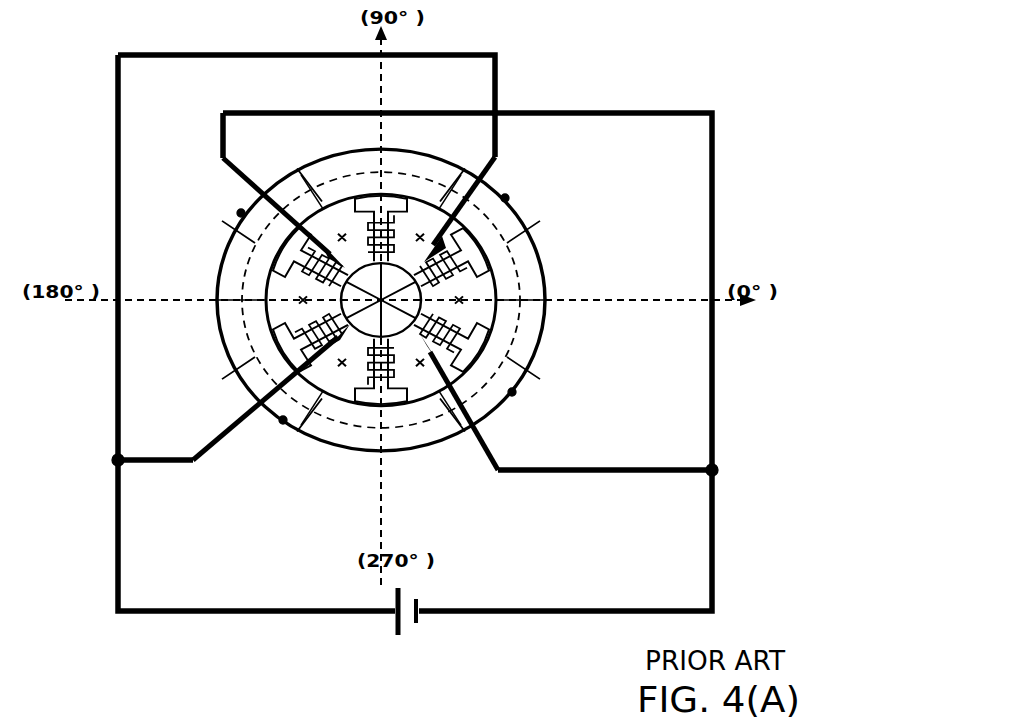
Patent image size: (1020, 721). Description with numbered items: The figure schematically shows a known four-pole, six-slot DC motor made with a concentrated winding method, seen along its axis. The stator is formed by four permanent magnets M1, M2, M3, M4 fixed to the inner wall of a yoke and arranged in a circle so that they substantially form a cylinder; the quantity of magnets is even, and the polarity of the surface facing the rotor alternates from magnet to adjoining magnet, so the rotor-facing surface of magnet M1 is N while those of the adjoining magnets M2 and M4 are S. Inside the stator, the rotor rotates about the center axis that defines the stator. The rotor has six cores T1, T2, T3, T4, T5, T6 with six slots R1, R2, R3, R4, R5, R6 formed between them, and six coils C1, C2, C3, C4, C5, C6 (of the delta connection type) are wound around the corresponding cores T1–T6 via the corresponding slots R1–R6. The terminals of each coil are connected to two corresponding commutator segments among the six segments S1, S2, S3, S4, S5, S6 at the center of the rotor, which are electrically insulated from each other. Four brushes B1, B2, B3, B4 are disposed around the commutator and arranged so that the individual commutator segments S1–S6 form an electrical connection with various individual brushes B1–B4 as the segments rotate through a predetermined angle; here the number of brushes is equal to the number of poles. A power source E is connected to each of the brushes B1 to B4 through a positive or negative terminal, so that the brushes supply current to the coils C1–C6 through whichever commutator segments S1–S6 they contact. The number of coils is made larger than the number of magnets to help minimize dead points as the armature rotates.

The brush B1 is at (496, 190).
The brush B2 is at (455, 420).
The brush B3 is at (348, 414).
The brush B4 is at (278, 188).
The core T1 is at (500, 248).
The core T2 is at (520, 360).
The core T3 is at (400, 440).
The core T4 is at (250, 372).
The core T5 is at (258, 248).
The core T6 is at (372, 168).
The coil C1 is at (518, 226).
The coil C2 is at (520, 332).
The coil C3 is at (378, 440).
The coil C4 is at (258, 344).
The coil C5 is at (265, 282).
The coil C6 is at (440, 165).
The slot R1 is at (458, 196).
The slot R2 is at (522, 300).
The slot R3 is at (470, 418).
The slot R4 is at (345, 440).
The slot R5 is at (262, 312).
The slot R6 is at (332, 200).
The permanent magnet M1 is at (507, 198).
The permanent magnet M2 is at (514, 394).
The permanent magnet M3 is at (283, 422).
The permanent magnet M4 is at (241, 212).
The commutator segment S1 is at (394, 279).
The commutator segment S2 is at (400, 301).
The commutator segment S3 is at (394, 321).
The commutator segment S4 is at (368, 321).
The commutator segment S5 is at (362, 301).
The commutator segment S6 is at (368, 279).
The power source E is at (383, 619).